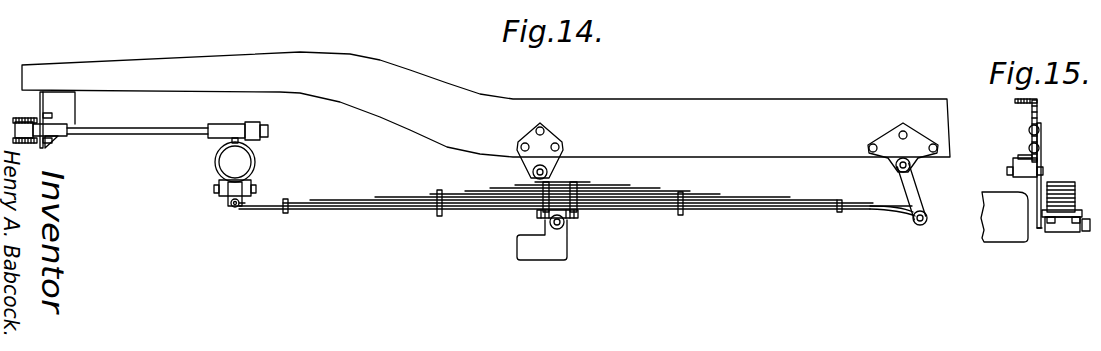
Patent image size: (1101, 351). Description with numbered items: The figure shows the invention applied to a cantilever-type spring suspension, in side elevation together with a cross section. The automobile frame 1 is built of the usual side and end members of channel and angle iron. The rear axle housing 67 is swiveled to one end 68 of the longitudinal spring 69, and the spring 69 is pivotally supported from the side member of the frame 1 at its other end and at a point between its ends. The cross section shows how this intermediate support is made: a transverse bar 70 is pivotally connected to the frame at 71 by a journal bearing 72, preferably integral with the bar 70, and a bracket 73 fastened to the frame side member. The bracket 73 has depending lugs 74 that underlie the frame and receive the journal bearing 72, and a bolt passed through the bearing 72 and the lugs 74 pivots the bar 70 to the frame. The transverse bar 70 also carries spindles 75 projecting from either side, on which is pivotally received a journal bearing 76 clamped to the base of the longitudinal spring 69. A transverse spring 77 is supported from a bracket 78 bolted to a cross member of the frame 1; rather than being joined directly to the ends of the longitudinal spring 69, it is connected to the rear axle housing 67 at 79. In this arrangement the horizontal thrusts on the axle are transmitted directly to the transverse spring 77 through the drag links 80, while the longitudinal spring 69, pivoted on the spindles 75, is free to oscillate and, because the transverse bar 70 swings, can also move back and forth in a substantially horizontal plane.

In FIG. 14, the frame 1 is at (509, 99).
In FIG. 15, the frame 1 is at (1043, 107).
In FIG. 14, the rear axle housing 67 is at (252, 161).
In FIG. 14, the end of the longitudinal spring 68 is at (231, 205).
In FIG. 14, the longitudinal spring 69 is at (478, 208).
In FIG. 15, the longitudinal spring 69 is at (1072, 195).
In FIG. 14, the transverse bar 70 is at (568, 251).
In FIG. 15, the transverse bar 70 is at (1005, 232).
In FIG. 15, the pivotal connection 71 is at (1016, 166).
In FIG. 15, the journal bearing 72 is at (1035, 167).
In FIG. 14, the bracket 73 is at (558, 131).
In FIG. 15, the bracket 73 is at (1042, 140).
In FIG. 15, the depending lugs 74 is at (1015, 176).
In FIG. 14, the spindles 75 is at (550, 227).
In FIG. 15, the spindles 75 is at (1043, 232).
In FIG. 14, the journal bearing 76 is at (567, 223).
In FIG. 15, the journal bearing 76 is at (1079, 237).
In FIG. 14, the transverse spring 77 is at (33, 121).
In FIG. 14, the bracket 78 is at (76, 109).
In FIG. 14, the connection to the rear axle housing 79 is at (225, 141).
In FIG. 14, the drag links 80 is at (128, 135).